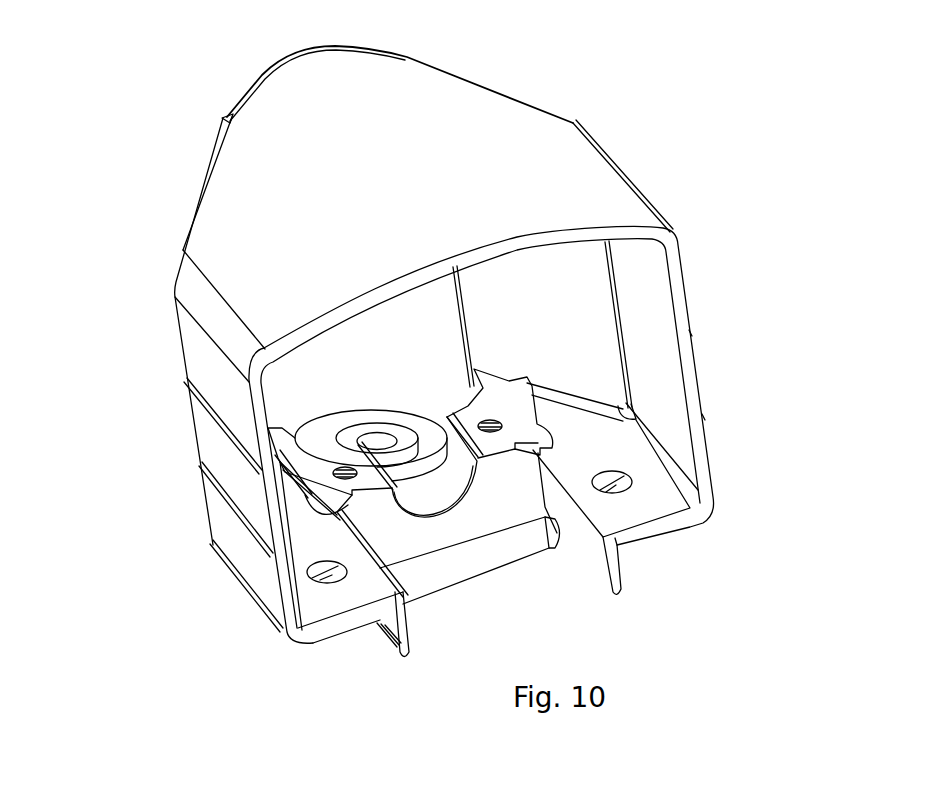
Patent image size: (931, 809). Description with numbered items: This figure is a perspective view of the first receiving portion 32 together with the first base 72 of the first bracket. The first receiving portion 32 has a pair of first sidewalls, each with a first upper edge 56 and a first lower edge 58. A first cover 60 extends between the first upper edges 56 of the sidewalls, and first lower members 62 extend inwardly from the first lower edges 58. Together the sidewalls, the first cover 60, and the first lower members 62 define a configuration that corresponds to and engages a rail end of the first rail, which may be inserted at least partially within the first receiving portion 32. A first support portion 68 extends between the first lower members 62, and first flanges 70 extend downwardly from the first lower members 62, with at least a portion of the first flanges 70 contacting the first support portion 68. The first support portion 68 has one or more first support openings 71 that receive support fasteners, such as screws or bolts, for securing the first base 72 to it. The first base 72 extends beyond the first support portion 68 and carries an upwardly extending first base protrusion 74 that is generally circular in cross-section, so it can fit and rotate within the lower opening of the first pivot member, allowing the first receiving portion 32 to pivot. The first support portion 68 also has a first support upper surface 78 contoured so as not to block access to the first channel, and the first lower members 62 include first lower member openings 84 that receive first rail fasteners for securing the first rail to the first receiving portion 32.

The first receiving portion 32 is at (695, 103).
The first upper edge 56 is at (200, 318).
The first lower edge 58 is at (242, 588).
The first cover 60 is at (467, 140).
The first lower member 62 is at (343, 607).
The first support portion 68 is at (498, 493).
The first flange 70 is at (407, 628).
The first support opening 71 is at (346, 466).
The first base 72 is at (432, 570).
The first base protrusion 74 is at (371, 435).
The first support upper surface 78 is at (445, 507).
The first lower member opening 84 is at (330, 562).